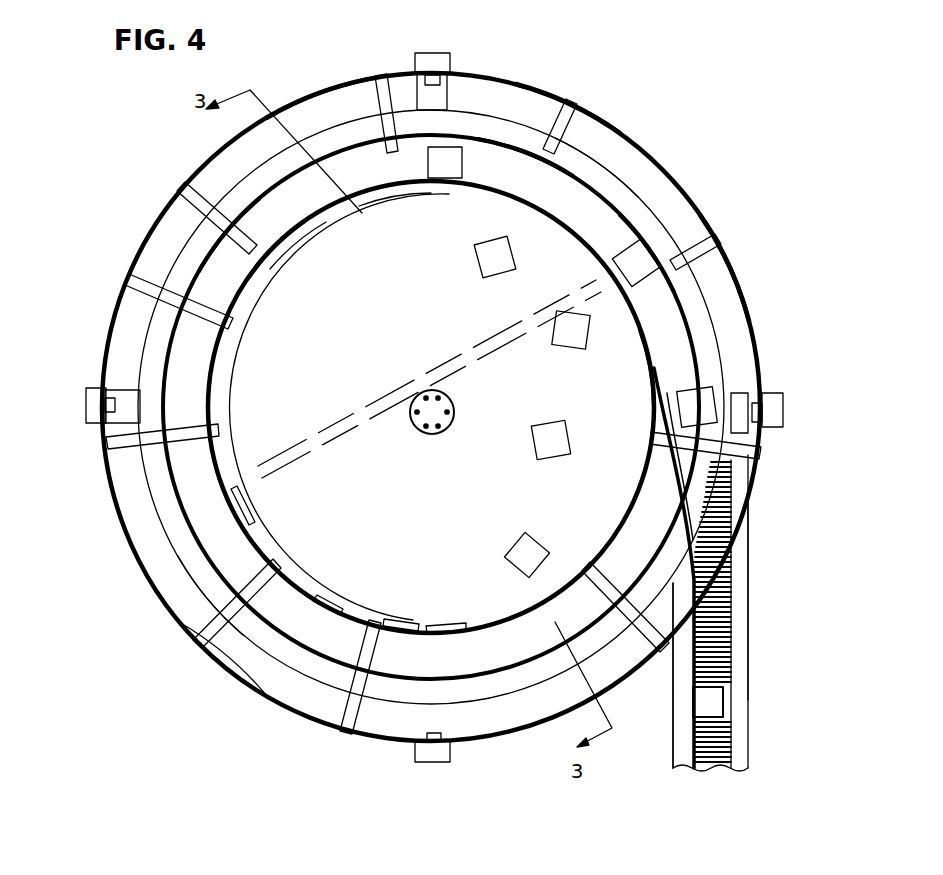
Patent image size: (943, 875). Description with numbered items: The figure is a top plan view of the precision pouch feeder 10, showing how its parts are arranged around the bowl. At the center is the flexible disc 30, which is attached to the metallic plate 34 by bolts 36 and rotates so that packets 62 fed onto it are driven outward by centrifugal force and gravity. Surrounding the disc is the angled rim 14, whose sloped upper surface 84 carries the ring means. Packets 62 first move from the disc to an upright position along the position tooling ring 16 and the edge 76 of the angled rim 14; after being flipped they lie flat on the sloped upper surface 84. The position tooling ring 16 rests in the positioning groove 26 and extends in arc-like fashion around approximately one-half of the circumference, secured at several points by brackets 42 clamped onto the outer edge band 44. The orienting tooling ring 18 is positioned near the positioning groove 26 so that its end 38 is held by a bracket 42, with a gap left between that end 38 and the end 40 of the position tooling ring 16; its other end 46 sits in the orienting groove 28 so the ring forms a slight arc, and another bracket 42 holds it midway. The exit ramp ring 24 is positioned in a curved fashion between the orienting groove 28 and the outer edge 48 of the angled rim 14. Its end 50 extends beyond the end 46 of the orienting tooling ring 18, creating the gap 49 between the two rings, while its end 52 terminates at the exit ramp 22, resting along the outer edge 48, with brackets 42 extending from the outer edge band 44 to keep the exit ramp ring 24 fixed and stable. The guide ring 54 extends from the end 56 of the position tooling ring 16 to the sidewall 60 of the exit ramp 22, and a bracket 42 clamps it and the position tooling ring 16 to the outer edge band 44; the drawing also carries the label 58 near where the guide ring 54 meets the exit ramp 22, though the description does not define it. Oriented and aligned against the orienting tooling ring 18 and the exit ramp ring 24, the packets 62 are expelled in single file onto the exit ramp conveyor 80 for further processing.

The precision pouch feeder 10 is at (146, 684).
The angled rim 14 is at (150, 333).
The position tooling ring 16 is at (216, 478).
The orienting tooling ring 18 is at (357, 140).
The exit ramp 22 is at (768, 658).
The exit ramp ring 24 is at (716, 280).
The positioning groove 26 is at (523, 168).
The orienting groove 28 is at (250, 200).
The flexible disc 30 is at (431, 407).
The metallic plate 34 is at (440, 390).
The bolts 36 is at (452, 410).
The end of orienting tooling ring 38 is at (252, 266).
The end of position tooling ring 40 is at (232, 298).
The brackets 42 is at (384, 72).
The outer edge band 44 is at (304, 98).
The end of orienting tooling ring 46 is at (568, 156).
The outer edge of angled rim 48 is at (690, 234).
The gap 49 is at (522, 146).
The end of exit ramp ring 50 is at (550, 104).
The end of exit ramp ring 52 is at (738, 476).
The guide ring 54 is at (684, 482).
The end of position tooling ring 56 is at (650, 370).
The chute side wall 58 is at (672, 568).
The sidewall of exit ramp 60 is at (682, 710).
The packets 62 is at (462, 162).
The edge of angled rim 76 is at (356, 198).
The exit ramp conveyor 80 is at (742, 652).
The sloped upper surface 84 is at (220, 560).